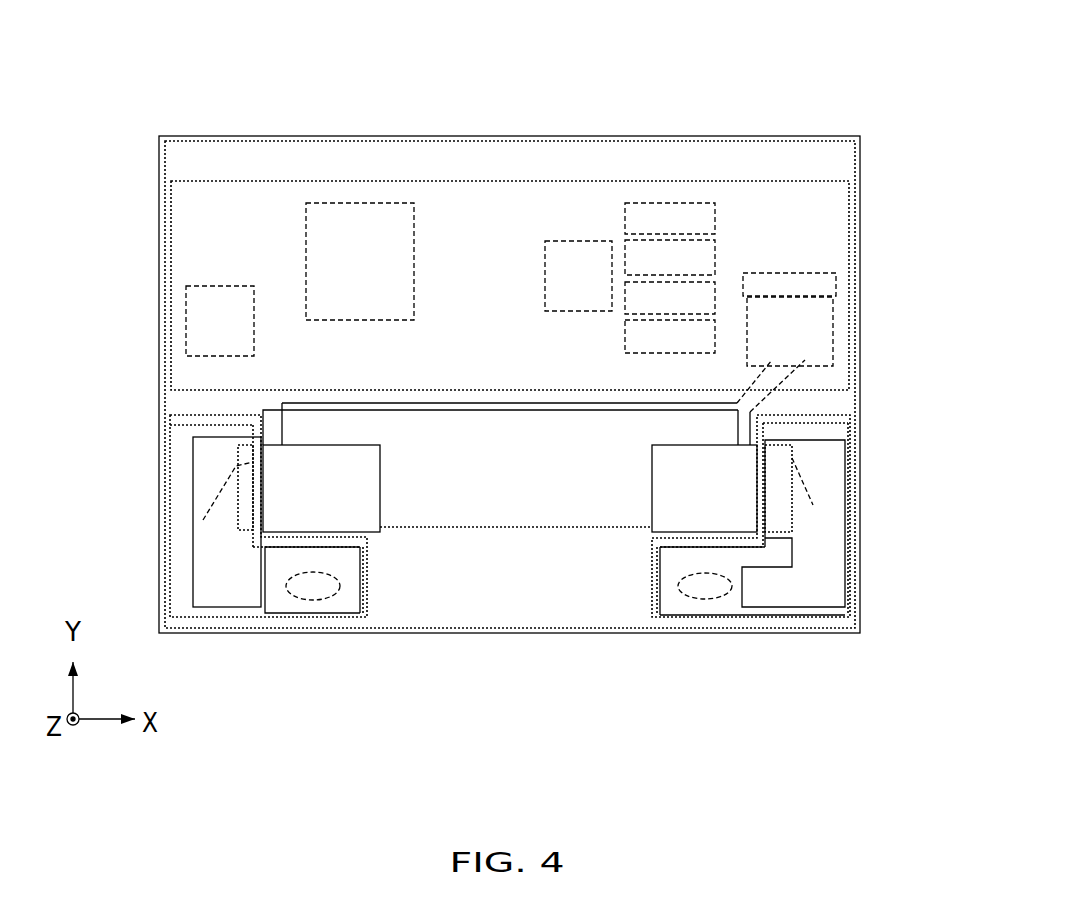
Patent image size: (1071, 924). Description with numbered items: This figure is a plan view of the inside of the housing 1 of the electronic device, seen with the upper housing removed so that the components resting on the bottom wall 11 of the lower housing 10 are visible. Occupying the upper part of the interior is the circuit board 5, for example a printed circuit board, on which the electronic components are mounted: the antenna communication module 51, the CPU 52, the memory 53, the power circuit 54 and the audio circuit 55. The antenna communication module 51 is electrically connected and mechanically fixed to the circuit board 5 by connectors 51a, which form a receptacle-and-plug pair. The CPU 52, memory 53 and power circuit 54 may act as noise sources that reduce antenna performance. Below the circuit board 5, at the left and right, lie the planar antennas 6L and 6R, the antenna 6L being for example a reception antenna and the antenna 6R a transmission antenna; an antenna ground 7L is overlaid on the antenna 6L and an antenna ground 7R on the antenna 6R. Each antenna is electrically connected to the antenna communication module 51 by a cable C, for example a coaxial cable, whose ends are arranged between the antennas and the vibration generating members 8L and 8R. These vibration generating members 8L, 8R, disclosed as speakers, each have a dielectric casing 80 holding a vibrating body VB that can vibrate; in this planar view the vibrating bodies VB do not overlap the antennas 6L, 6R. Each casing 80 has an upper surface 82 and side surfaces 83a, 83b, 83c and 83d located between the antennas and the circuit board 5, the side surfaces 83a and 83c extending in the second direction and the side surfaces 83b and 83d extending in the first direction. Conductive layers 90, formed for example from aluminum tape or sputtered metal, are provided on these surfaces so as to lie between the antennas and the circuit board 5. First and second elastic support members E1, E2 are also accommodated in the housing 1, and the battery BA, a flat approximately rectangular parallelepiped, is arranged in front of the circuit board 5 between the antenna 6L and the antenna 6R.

The housing 1 is at (816, 108).
The circuit board 5 is at (231, 220).
The lower housing 10 is at (469, 637).
The bottom wall 11 is at (505, 605).
The battery BA is at (490, 507).
The cable C is at (417, 412).
The antenna communication module 51 is at (833, 330).
The connectors 51a is at (820, 273).
The CPU 52 is at (578, 241).
The memory 53 is at (677, 203).
The power circuit 54 is at (370, 203).
The audio circuit 55 is at (186, 323).
The antenna 6L is at (211, 609).
The antenna 6R is at (835, 610).
The antenna ground 7L is at (297, 500).
The antenna ground 7R is at (737, 508).
The vibration generating member 8L is at (336, 658).
The vibration generating member 8R is at (772, 655).
The casing 80 is at (257, 628).
The upper surface 82 is at (280, 600).
The side surface 83a is at (370, 563).
The side surface 83b is at (351, 532).
The side surface 83c is at (269, 427).
The side surface 83d is at (186, 417).
The conductive layer 90 is at (370, 585).
The vibrating body VB is at (312, 600).
The first elastic support member E1 is at (372, 628).
The second elastic support member E2 is at (359, 618).